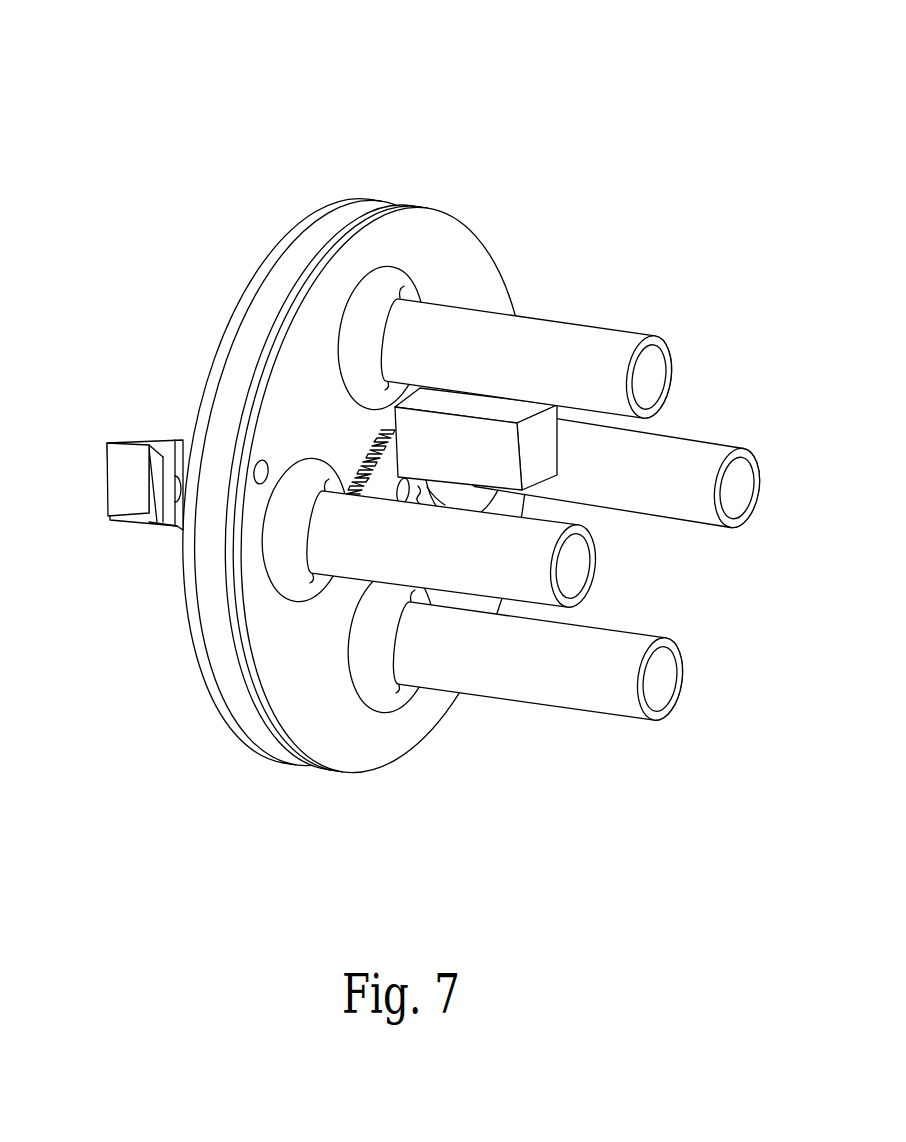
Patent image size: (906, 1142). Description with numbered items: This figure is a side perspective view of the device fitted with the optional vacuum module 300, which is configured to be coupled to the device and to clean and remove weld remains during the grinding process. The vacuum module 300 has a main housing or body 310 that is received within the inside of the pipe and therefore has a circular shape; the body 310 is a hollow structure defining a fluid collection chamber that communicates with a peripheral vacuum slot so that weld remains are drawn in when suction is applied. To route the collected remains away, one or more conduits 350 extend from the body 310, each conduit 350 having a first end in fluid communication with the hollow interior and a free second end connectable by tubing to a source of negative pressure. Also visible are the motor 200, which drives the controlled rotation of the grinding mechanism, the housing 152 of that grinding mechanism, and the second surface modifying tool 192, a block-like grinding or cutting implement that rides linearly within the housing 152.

The vacuum module 300 is at (192, 75).
The main housing or body 310 is at (465, 252).
The motor 200 is at (538, 462).
The conduit 350 is at (573, 653).
The housing 152 is at (164, 442).
The second surface modifying tool 192 is at (122, 487).